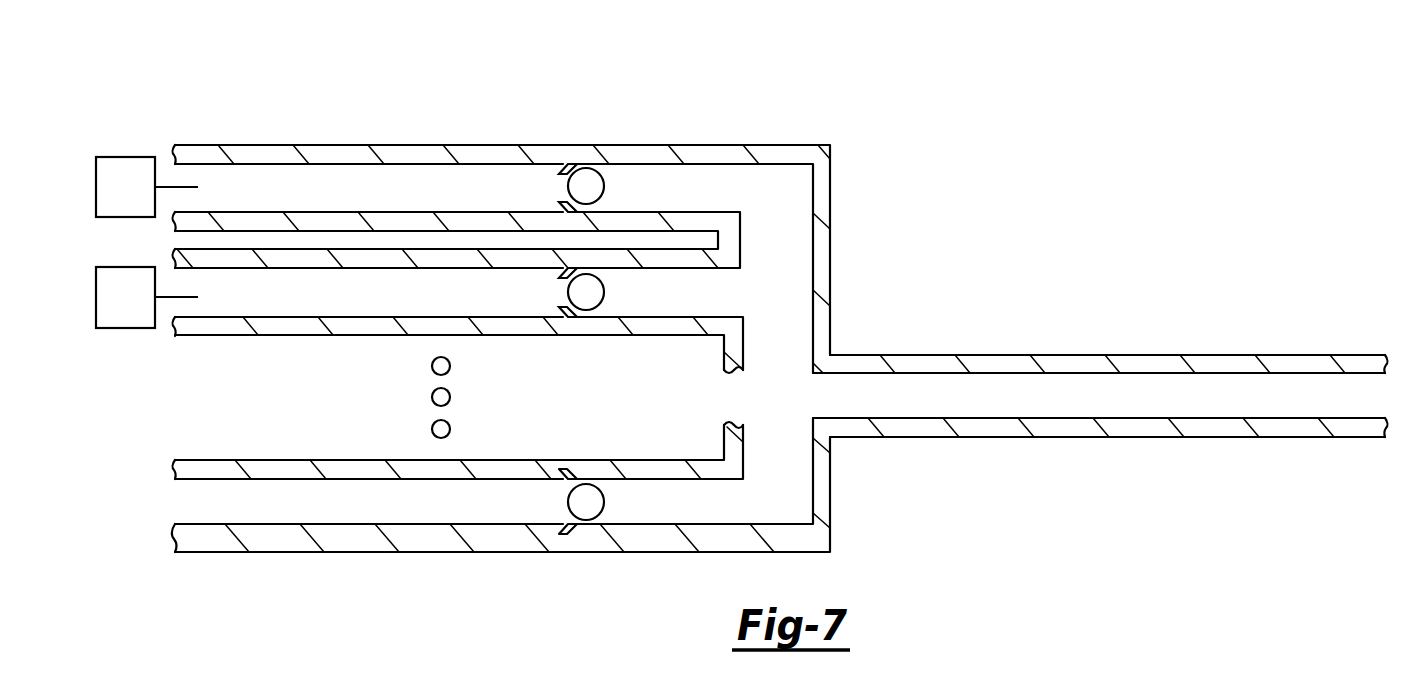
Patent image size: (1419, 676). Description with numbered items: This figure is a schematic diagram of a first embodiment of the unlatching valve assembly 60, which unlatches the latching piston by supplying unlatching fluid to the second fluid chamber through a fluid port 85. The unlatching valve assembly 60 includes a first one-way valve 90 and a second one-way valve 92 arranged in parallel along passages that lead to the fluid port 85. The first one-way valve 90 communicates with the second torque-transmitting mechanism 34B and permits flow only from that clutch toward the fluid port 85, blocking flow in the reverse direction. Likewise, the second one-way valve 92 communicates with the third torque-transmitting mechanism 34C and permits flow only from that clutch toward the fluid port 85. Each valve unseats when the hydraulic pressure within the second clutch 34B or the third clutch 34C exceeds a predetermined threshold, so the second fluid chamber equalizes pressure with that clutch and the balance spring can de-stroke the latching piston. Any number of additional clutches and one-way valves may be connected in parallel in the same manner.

The unlatching valve assembly 60 is at (889, 83).
The fluid port 85 is at (1374, 413).
The first one-way valve 90 is at (583, 180).
The second one-way valve 92 is at (585, 298).
The second torque-transmitting mechanism 34B is at (147, 187).
The third torque-transmitting mechanism 34C is at (147, 297).